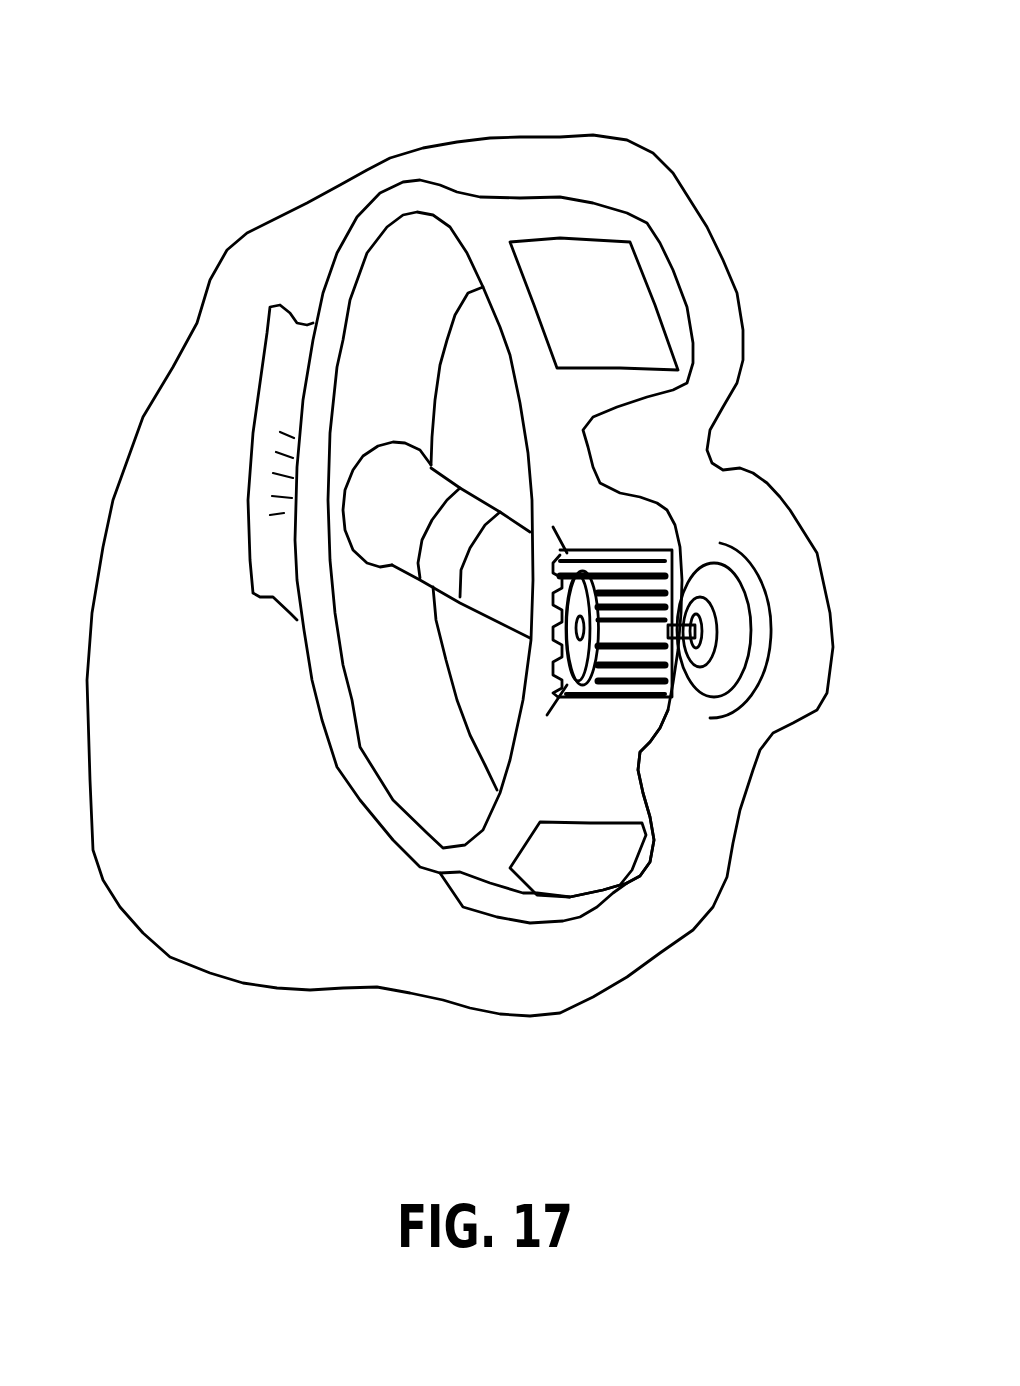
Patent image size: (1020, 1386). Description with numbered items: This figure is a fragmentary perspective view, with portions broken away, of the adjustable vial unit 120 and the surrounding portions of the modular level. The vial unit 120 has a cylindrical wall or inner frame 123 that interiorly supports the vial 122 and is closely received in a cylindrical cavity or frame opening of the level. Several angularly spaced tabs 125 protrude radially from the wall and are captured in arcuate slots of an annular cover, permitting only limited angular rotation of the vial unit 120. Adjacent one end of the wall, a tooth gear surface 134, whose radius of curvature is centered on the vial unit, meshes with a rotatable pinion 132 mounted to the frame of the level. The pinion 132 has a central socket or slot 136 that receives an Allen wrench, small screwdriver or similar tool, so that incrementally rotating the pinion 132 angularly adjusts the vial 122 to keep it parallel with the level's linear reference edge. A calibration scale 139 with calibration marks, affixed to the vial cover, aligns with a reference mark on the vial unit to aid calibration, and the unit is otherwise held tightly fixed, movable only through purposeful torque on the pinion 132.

The adjustable vial unit 120 is at (376, 130).
The vial 122 is at (383, 526).
The inner frame 123 is at (743, 468).
The tabs 125 is at (610, 288).
The pinion 132 is at (643, 640).
The tooth gear surface 134 is at (643, 753).
The slot 136 is at (602, 592).
The calibration scale 139 is at (260, 433).